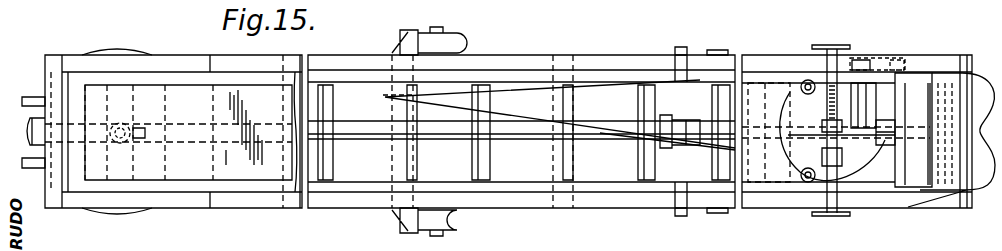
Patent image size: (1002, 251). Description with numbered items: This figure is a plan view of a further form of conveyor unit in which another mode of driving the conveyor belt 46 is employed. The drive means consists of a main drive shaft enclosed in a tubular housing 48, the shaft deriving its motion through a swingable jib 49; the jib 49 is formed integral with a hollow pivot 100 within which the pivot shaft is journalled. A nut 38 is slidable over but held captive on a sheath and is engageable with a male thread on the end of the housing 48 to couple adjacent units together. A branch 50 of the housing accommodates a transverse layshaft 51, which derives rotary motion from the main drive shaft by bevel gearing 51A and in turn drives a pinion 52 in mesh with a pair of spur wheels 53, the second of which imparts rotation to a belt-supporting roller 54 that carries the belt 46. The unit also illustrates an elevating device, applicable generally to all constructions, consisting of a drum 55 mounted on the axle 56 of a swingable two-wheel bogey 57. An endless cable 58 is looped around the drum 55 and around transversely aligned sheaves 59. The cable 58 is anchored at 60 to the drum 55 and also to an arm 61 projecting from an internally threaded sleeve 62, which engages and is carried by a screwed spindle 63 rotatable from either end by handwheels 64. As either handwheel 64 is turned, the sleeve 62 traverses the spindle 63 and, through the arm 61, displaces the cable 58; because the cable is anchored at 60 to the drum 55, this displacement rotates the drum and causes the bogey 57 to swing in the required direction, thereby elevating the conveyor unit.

The coupler 38 is at (30, 122).
The conveyor belt 46 is at (755, 45).
The tubular housing 48 is at (356, 128).
The swingable jib 49 is at (78, 143).
The branch 50 is at (875, 102).
The transverse layshaft 51 is at (841, 142).
The bevel gearing 51A is at (891, 144).
The pinion 52 is at (867, 60).
The spur wheels 53 is at (880, 60).
The belt-supporting roller 54 is at (893, 185).
The drum 55 is at (392, 160).
The axle 56 is at (392, 58).
The swingable two-wheel bogey 57 is at (410, 30).
The endless cable 58 is at (545, 122).
The sheaves 59 is at (806, 170).
The anchorage 60 is at (825, 172).
The arm 61 is at (842, 165).
The internally threaded sleeve 62 is at (836, 105).
The screwed spindle 63 is at (832, 92).
The handwheels 64 is at (824, 45).
The hollow pivot 100 is at (124, 148).